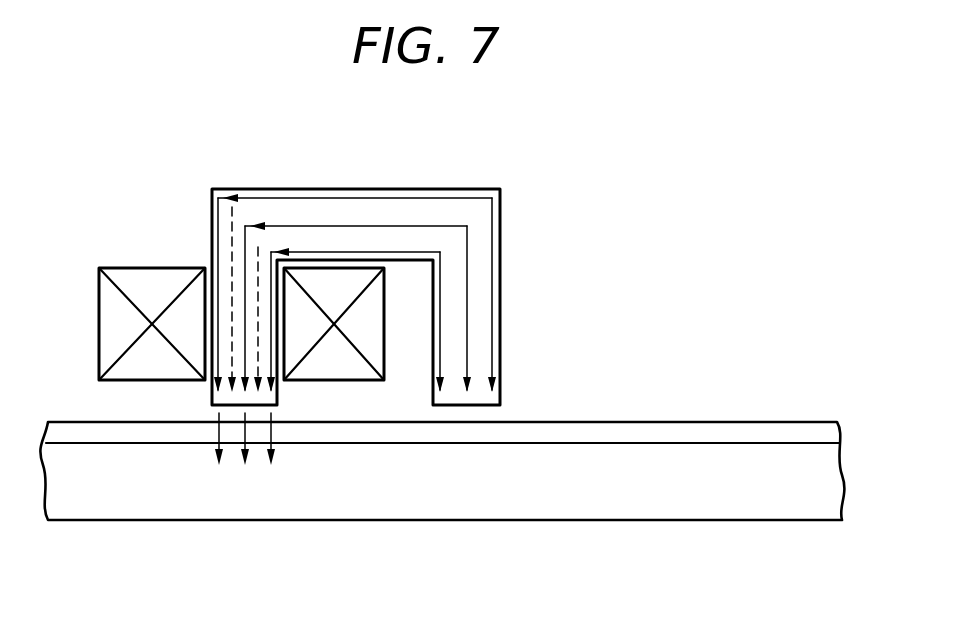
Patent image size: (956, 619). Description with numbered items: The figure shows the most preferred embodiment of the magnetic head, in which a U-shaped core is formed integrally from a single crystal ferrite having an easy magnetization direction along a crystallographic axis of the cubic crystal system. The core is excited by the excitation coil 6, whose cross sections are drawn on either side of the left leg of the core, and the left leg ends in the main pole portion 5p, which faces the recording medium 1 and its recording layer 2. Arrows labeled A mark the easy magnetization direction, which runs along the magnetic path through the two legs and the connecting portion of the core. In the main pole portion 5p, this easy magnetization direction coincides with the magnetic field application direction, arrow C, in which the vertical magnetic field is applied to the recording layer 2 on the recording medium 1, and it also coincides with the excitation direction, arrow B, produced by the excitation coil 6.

The recording medium 1 is at (588, 505).
The recording layer 2 is at (693, 440).
The main pole portion 5p is at (227, 347).
The coil 6 is at (108, 302).
The excitation direction B is at (233, 245).
The magnetic field application direction C is at (277, 456).